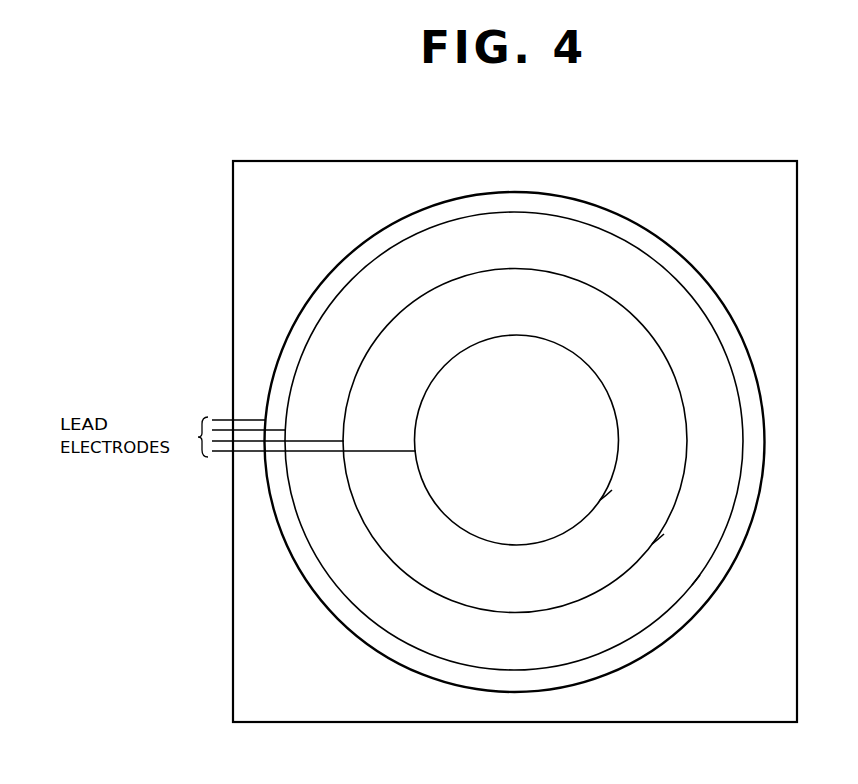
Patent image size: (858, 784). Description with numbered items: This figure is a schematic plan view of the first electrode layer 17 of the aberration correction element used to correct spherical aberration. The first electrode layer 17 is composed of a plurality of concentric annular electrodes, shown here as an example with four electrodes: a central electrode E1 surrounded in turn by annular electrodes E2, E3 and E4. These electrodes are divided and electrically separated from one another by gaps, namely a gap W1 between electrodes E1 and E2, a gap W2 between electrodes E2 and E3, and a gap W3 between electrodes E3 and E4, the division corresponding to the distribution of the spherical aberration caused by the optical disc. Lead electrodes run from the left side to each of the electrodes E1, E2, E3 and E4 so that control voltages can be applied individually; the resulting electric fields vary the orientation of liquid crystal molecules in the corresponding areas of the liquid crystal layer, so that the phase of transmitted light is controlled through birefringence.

The first electrode layer 17 is at (628, 138).
The first electrode E1 is at (528, 389).
The second electrode E2 is at (404, 389).
The third electrode E3 is at (331, 389).
The fourth electrode E4 is at (283, 367).
The first gap W1 is at (600, 500).
The second gap W2 is at (652, 544).
The third gap W3 is at (692, 585).